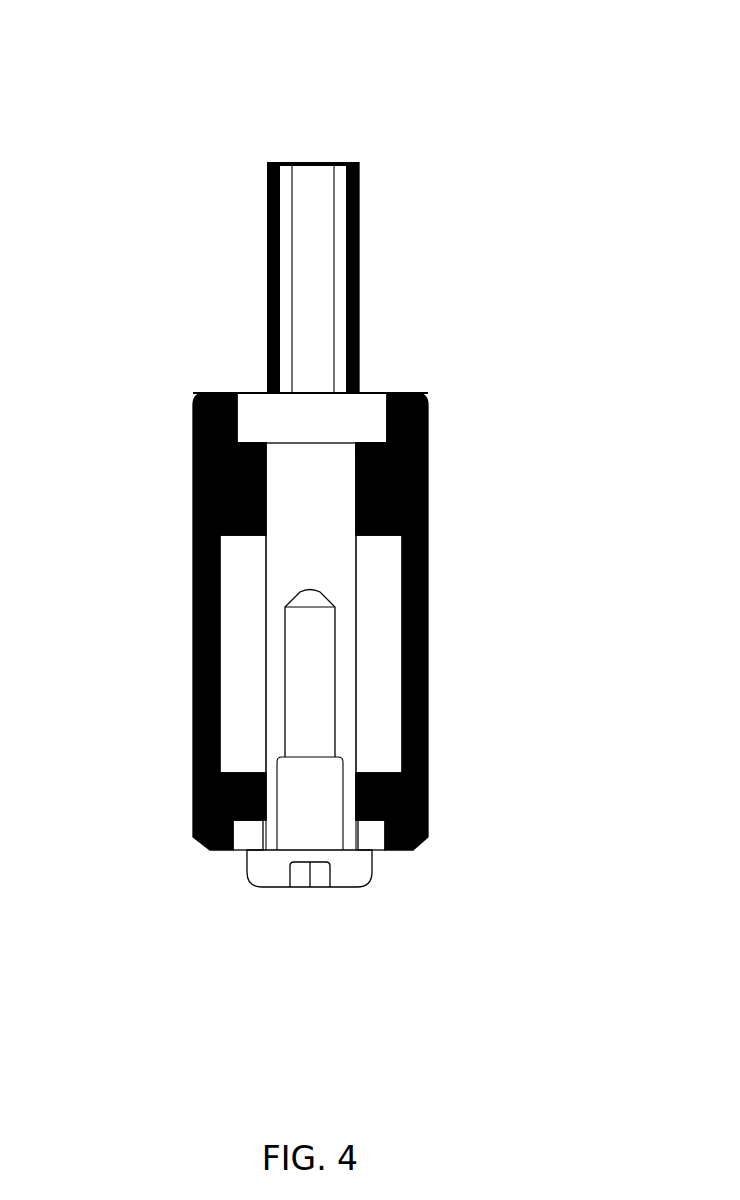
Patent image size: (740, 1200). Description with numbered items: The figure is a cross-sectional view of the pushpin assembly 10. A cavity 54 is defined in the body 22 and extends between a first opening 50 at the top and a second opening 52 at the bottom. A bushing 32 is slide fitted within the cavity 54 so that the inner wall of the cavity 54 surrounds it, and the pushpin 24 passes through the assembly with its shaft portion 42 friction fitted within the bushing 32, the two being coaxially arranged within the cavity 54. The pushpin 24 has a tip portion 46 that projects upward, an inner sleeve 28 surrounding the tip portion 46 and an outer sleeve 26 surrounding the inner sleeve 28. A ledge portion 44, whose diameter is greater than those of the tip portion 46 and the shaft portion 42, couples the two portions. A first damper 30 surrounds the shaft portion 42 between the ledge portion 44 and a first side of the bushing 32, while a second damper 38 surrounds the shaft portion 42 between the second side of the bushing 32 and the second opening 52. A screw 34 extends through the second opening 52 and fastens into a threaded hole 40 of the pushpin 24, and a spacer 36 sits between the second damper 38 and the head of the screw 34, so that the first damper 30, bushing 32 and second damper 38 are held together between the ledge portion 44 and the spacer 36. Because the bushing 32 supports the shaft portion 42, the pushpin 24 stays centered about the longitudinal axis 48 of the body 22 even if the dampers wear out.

The pushpin assembly 10 is at (38, 36).
The body 22 is at (202, 427).
The pushpin 24 is at (312, 152).
The outer sleeve 26 is at (360, 246).
The inner sleeve 28 is at (266, 268).
The first damper 30 is at (237, 500).
The bushing 32 is at (240, 655).
The screw 34 is at (258, 870).
The spacer 36 is at (367, 835).
The second damper 38 is at (242, 795).
The threaded hole 40 is at (325, 700).
The shaft portion 42 is at (328, 560).
The ledge portion 44 is at (367, 407).
The tip portion 46 is at (315, 305).
The longitudinal axis 48 is at (649, 678).
The first opening 50 is at (218, 350).
The second opening 52 is at (383, 872).
The cavity 54 is at (392, 423).